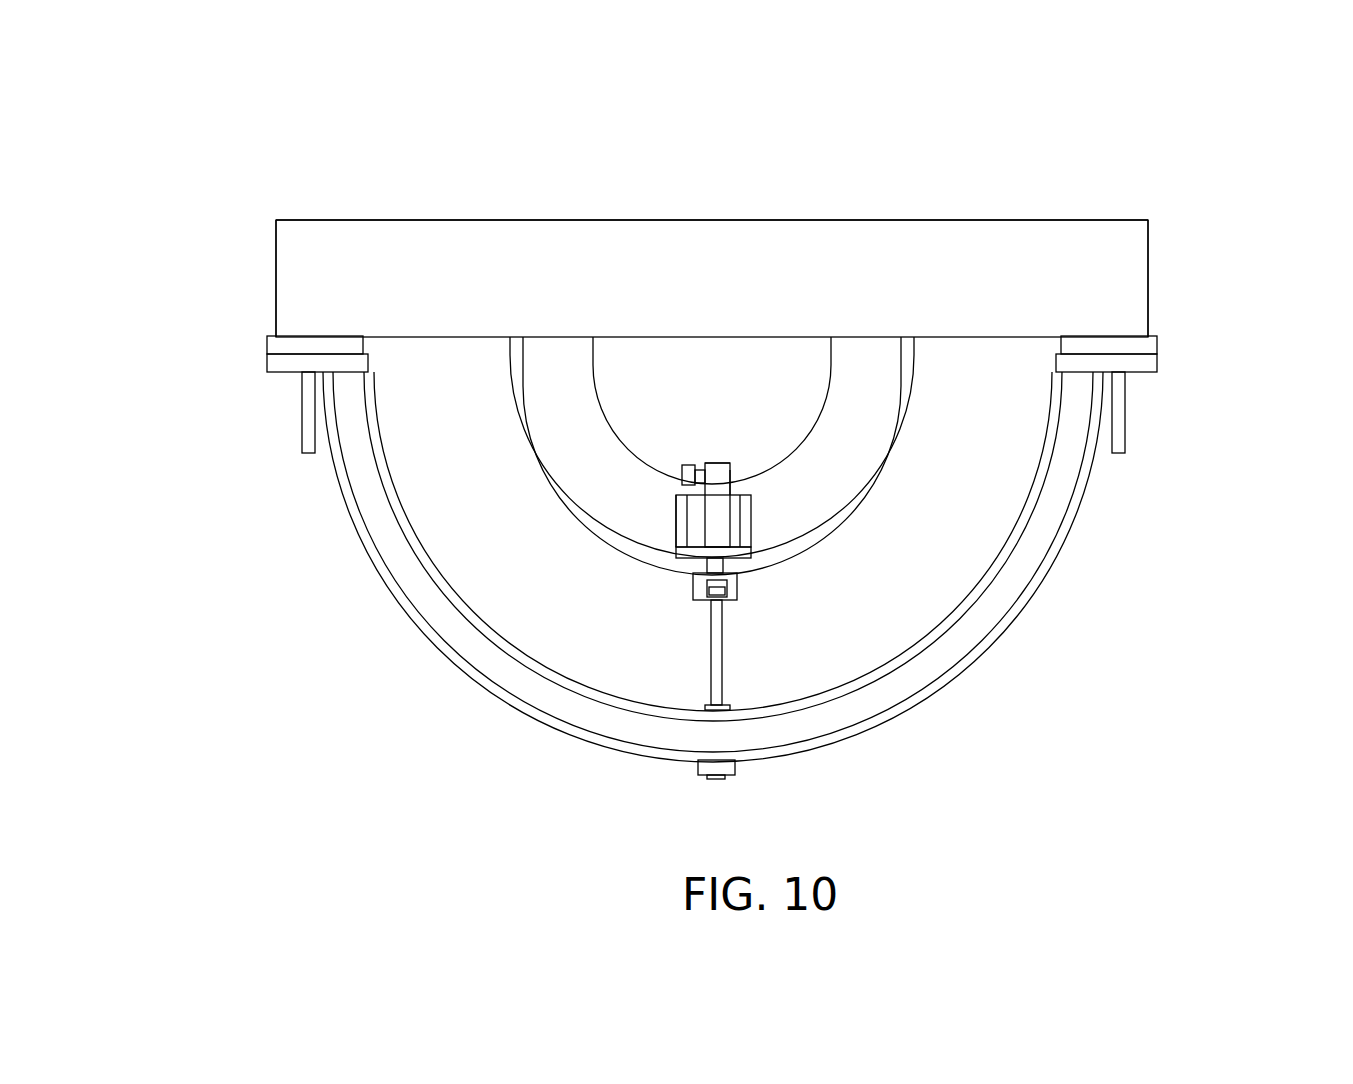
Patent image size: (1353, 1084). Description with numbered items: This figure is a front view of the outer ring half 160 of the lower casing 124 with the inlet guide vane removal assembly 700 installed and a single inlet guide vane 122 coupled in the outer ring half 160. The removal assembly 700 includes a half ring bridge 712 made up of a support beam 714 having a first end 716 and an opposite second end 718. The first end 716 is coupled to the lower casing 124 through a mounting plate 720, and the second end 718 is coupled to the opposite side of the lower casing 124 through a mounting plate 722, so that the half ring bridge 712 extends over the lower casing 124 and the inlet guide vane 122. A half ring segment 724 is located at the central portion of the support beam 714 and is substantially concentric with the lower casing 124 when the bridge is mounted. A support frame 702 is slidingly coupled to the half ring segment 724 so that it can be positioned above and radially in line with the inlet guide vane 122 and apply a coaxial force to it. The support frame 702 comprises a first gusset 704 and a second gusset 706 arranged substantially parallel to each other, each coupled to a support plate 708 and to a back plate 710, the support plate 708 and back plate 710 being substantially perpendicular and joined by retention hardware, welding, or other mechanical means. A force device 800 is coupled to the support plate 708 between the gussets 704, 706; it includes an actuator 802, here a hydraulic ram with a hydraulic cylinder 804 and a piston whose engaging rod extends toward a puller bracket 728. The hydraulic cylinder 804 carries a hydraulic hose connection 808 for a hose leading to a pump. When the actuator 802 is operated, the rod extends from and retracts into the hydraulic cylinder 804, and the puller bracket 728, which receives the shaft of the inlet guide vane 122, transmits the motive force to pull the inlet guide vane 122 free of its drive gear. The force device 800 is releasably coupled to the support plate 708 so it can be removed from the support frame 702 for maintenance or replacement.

The inlet guide vane removal assembly 700 is at (1097, 168).
The half ring bridge 712 is at (325, 207).
The support beam 714 is at (652, 238).
The first end 716 is at (266, 277).
The second end 718 is at (1160, 274).
The mounting plate 720 is at (267, 345).
The mounting plate 722 is at (1157, 342).
The lower casing 124 is at (267, 365).
The outer ring half 160 is at (1040, 590).
The half ring segment 724 is at (545, 485).
The force device 800 is at (733, 450).
The actuator 802 is at (708, 456).
The hydraulic cylinder 804 is at (723, 463).
The hydraulic hose connection 808 is at (688, 465).
The back plate 710 is at (733, 486).
The support frame 702 is at (760, 528).
The second gusset 706 is at (752, 513).
The first gusset 704 is at (676, 520).
The support plate 708 is at (697, 562).
The puller bracket 728 is at (737, 585).
The inlet guide vane 122 is at (723, 657).